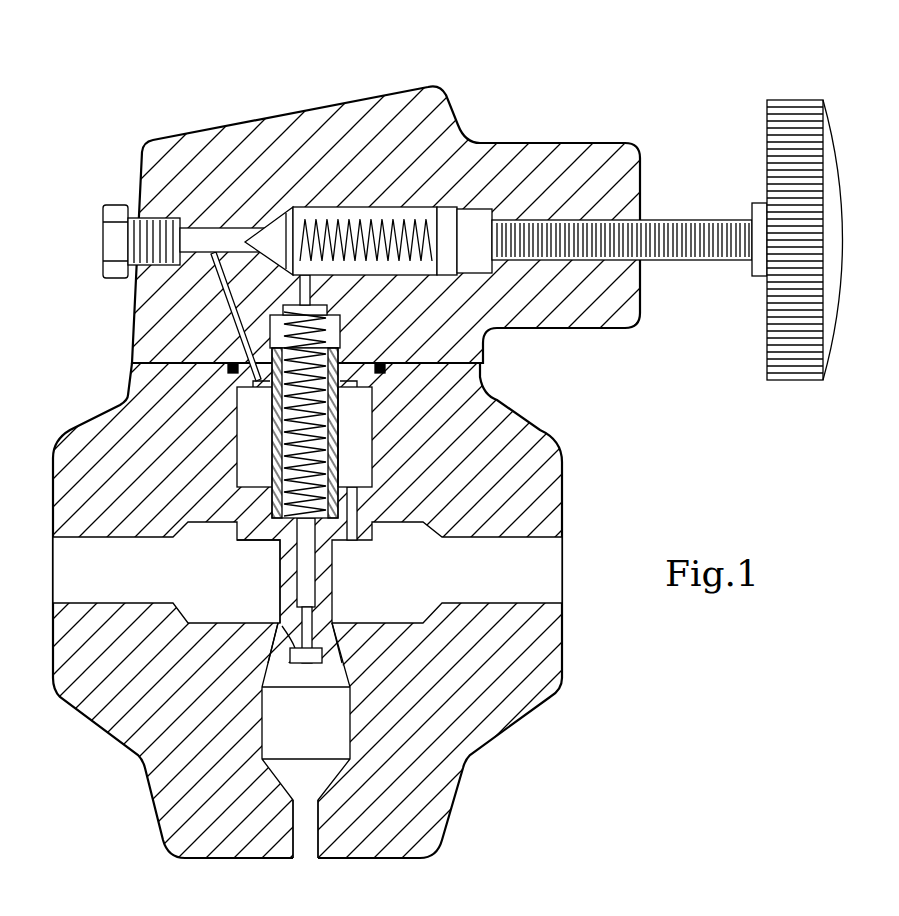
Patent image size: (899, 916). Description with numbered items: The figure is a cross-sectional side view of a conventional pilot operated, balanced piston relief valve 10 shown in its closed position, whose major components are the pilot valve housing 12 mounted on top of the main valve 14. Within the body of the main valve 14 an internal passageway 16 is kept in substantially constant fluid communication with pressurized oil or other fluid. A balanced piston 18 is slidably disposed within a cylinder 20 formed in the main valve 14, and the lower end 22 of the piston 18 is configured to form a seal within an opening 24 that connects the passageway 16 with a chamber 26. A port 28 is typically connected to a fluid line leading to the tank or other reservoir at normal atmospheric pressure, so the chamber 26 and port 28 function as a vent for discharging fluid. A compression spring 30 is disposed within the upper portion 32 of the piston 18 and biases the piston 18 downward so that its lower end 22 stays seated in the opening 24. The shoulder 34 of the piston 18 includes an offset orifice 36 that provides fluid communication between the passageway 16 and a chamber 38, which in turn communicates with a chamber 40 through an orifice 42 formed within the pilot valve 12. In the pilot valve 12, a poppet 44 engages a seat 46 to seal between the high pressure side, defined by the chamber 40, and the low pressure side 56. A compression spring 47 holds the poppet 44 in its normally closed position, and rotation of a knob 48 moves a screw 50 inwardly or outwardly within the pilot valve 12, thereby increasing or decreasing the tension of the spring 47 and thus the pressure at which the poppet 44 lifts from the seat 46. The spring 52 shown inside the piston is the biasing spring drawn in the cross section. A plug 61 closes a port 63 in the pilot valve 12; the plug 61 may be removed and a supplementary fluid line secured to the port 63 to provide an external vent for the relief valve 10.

The relief valve 10 is at (552, 772).
The pilot valve housing 12 is at (612, 175).
The main valve 14 is at (540, 458).
The internal passageway 16 is at (94, 583).
The balanced piston 18 is at (325, 582).
The cylinder 20 is at (355, 440).
The lower end 22 is at (340, 625).
The opening 24 is at (282, 635).
The chamber 26 is at (294, 745).
The port 28 is at (308, 845).
The compression spring 30 is at (338, 410).
The upper portion 32 is at (343, 345).
The shoulder 34 is at (262, 533).
The offset orifice 36 is at (352, 532).
The chamber 38 is at (245, 415).
The chamber 40 is at (220, 232).
The orifice 42 is at (238, 327).
The poppet 44 is at (263, 235).
The seat 46 is at (277, 242).
The compression spring 47 is at (432, 225).
The knob 48 is at (795, 115).
The screw 50 is at (713, 218).
The piston spring 52 is at (285, 455).
The low pressure side 56 is at (374, 218).
The plug 61 is at (103, 258).
The port 63 is at (150, 217).